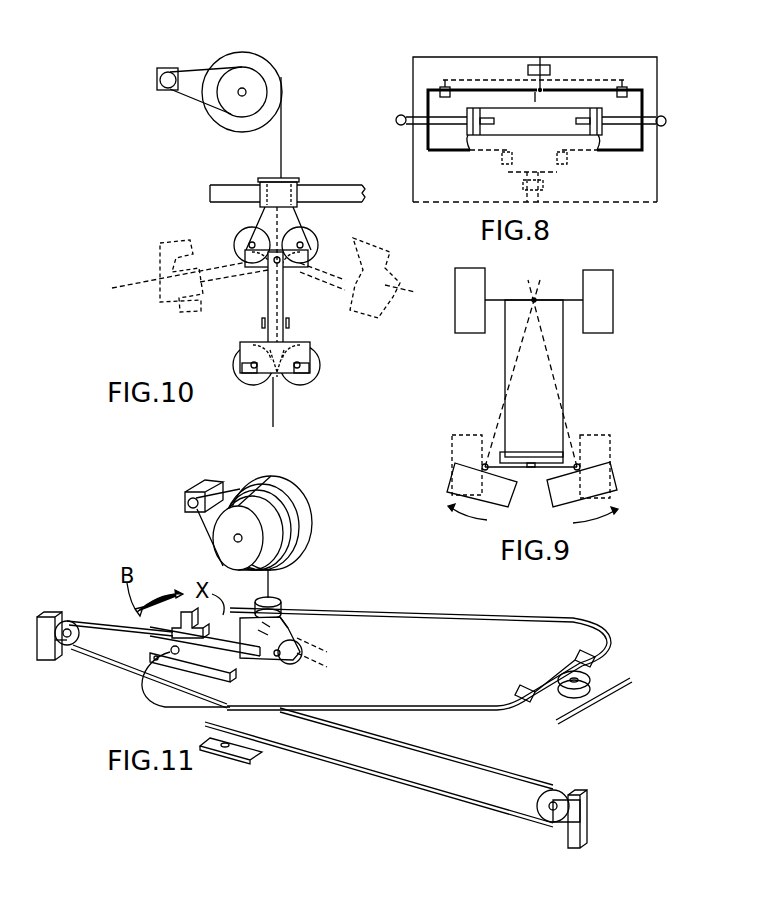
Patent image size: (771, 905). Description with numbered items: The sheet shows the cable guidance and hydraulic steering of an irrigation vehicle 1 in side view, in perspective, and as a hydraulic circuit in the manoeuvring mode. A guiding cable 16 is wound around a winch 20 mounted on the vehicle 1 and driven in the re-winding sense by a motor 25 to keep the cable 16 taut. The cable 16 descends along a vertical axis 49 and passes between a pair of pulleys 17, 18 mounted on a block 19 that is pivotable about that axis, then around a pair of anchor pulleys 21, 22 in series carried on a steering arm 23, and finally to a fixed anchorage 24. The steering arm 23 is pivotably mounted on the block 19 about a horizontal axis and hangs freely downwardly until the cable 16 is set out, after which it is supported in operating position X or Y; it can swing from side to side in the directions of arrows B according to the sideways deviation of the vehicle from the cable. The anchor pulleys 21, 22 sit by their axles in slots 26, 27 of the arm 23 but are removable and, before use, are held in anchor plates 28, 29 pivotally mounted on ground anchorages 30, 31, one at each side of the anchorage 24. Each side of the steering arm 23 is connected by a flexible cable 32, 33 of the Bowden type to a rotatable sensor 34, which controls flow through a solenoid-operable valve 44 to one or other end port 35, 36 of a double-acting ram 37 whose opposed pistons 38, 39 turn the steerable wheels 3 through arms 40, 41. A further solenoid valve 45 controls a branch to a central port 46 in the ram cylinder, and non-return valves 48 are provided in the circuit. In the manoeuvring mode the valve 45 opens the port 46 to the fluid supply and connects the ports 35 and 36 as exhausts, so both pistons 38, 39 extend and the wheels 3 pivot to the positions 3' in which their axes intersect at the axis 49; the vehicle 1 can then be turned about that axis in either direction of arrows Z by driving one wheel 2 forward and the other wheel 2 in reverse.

In FIG. 10, the vehicle 1 is at (349, 193).
In FIG. 9, the vehicle 1 is at (557, 358).
In FIG. 9, the wheel 2 is at (590, 290).
In FIG. 9, the steerable wheels 3 is at (531, 442).
In FIG. 9, the steerable wheels in manoeuvring position 3' is at (530, 498).
In FIG. 10, the cable 16 is at (273, 417).
In FIG. 11, the cable 16 is at (272, 588).
In FIG. 10, the pulley 17 is at (247, 233).
In FIG. 10, the pulley 18 is at (313, 243).
In FIG. 11, the pulley 18 is at (293, 660).
In FIG. 10, the block 19 is at (285, 222).
In FIG. 11, the block 19 is at (262, 636).
In FIG. 10, the winch 20 is at (272, 80).
In FIG. 11, the winch 20 is at (297, 513).
In FIG. 10, the anchor pulley 21 is at (253, 383).
In FIG. 11, the anchor pulley 21 is at (556, 805).
In FIG. 10, the anchor pulley 22 is at (302, 383).
In FIG. 11, the anchor pulley 22 is at (82, 644).
In FIG. 10, the steering arm 23 is at (185, 226).
In FIG. 11, the steering arm 23 is at (185, 644).
In FIG. 11, the fixed anchorage 24 is at (220, 748).
In FIG. 10, the motor 25 is at (168, 90).
In FIG. 11, the motor 25 is at (195, 487).
In FIG. 10, the slot 26 is at (252, 363).
In FIG. 11, the slot 26 is at (185, 612).
In FIG. 10, the slot 27 is at (299, 367).
In FIG. 11, the slot 27 is at (177, 660).
In FIG. 11, the anchor plate 28 is at (570, 808).
In FIG. 11, the anchor plate 29 is at (48, 615).
In FIG. 11, the anchorage 30 is at (570, 840).
In FIG. 11, the anchorage 31 is at (57, 650).
In FIG. 11, the flexible cable 32 is at (410, 705).
In FIG. 11, the flexible cable 33 is at (455, 617).
In FIG. 11, the rotatable sensor 34 is at (560, 697).
In FIG. 8, the end port 35 is at (468, 136).
In FIG. 8, the end port 36 is at (598, 137).
In FIG. 8, the double-acting ram 37 is at (512, 108).
In FIG. 8, the piston 38 is at (473, 110).
In FIG. 8, the piston 39 is at (613, 120).
In FIG. 8, the arm 40 is at (400, 117).
In FIG. 8, the arm 41 is at (660, 128).
In FIG. 8, the solenoid-operable valve 44 is at (545, 184).
In FIG. 8, the solenoid valve 45 is at (550, 67).
In FIG. 8, the central port 46 is at (537, 108).
In FIG. 8, the non-return valves 48 is at (445, 87).
In FIG. 10, the vertical axis 49 is at (280, 190).
In FIG. 9, the vertical axis 49 is at (536, 300).